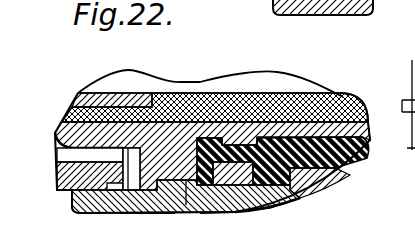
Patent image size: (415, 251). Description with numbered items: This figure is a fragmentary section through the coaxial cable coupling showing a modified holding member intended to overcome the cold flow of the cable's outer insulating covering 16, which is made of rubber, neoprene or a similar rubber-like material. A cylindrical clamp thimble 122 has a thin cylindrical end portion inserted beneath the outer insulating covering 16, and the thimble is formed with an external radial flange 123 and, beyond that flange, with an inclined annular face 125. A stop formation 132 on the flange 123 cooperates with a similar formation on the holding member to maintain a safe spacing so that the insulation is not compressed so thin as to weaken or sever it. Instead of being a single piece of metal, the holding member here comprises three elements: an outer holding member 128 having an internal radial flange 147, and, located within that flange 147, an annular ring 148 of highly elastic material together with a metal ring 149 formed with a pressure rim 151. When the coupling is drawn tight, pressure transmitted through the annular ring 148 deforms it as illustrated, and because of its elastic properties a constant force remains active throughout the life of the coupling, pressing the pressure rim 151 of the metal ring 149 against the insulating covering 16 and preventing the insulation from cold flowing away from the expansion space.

The outer insulating covering 16 is at (367, 155).
The clamp thimble 122 is at (310, 110).
The external radial flange 123 is at (147, 212).
The inclined annular face 125 is at (252, 118).
The holding member 128 is at (252, 210).
The stop formation 132 is at (112, 215).
The internal radial flange 147 is at (312, 190).
The annular ring 148 is at (282, 203).
The metal ring 149 is at (218, 212).
The pressure rim 151 is at (190, 205).